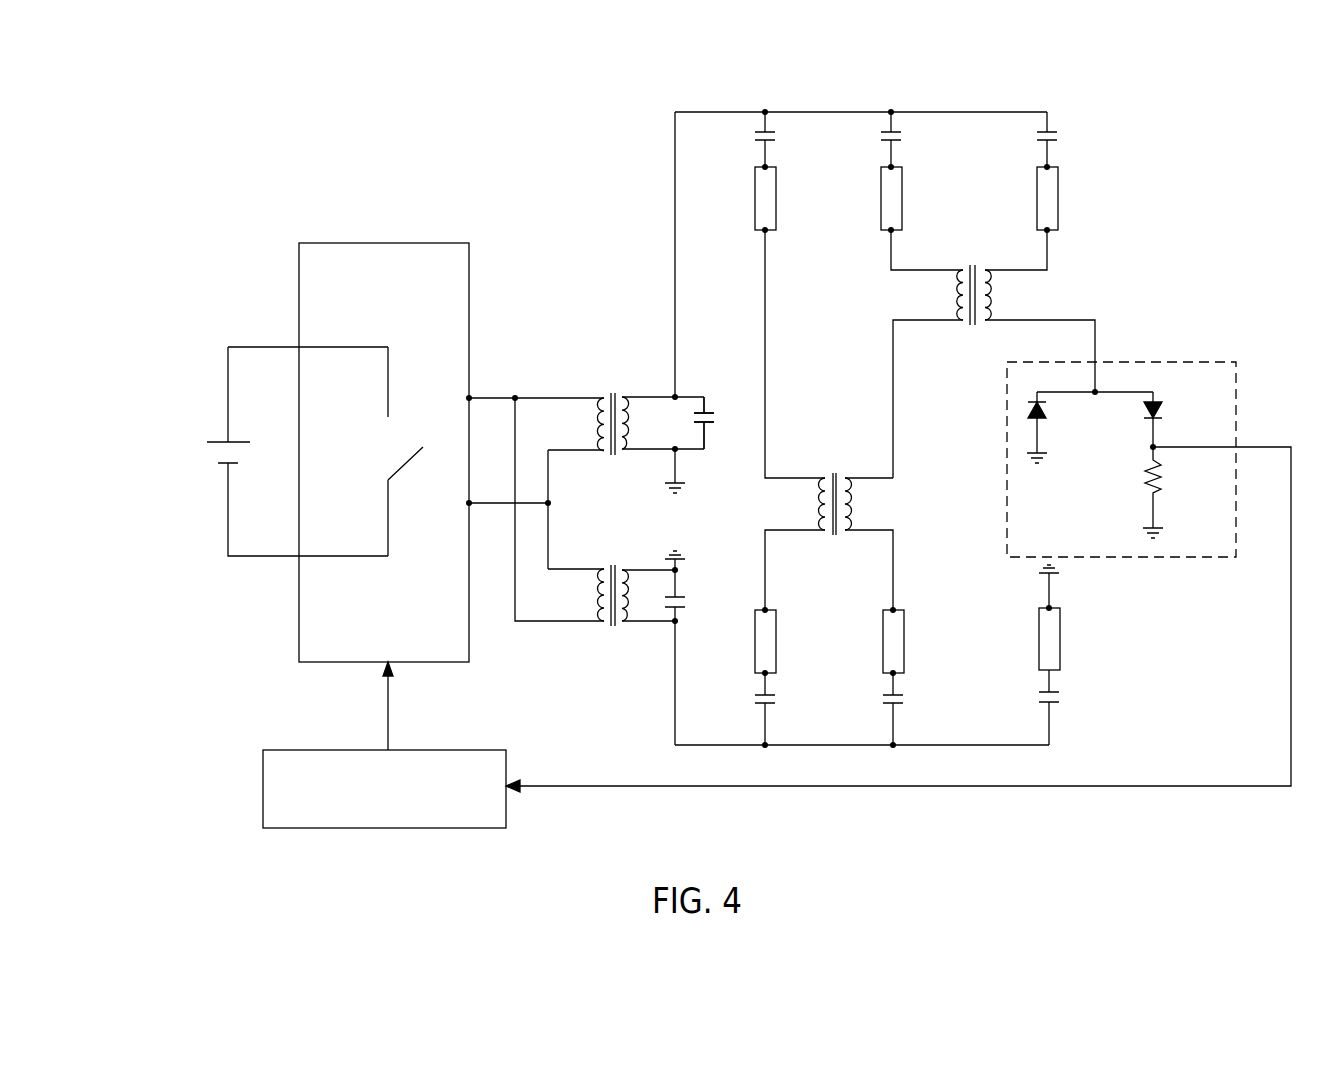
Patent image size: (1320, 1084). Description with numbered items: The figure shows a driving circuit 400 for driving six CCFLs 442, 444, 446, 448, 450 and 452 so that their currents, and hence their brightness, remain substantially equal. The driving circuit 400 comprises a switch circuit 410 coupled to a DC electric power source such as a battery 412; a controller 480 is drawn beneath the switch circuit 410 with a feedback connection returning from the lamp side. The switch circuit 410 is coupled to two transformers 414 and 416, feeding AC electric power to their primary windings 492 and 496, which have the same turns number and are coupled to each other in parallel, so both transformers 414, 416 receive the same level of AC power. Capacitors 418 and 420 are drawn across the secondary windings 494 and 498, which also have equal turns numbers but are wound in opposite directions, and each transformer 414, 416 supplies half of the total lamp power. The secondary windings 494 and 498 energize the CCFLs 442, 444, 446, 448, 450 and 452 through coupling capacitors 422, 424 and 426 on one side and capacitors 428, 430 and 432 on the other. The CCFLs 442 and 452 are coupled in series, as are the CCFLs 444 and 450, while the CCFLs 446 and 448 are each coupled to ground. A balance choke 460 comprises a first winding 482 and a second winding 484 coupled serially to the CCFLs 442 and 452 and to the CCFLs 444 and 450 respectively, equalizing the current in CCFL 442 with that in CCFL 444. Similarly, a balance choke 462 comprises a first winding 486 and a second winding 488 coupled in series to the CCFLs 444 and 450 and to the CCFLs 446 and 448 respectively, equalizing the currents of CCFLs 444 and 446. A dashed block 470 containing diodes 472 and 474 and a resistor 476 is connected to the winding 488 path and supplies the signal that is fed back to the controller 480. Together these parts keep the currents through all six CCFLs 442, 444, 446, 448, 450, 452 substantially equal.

The driving circuit 400 is at (226, 183).
The switch circuit 410 is at (417, 662).
The battery 412 is at (226, 442).
The transformer 414 is at (615, 425).
The transformer 416 is at (615, 596).
The capacitor 418 is at (713, 427).
The capacitor 420 is at (680, 615).
The capacitor 422 is at (770, 140).
The capacitor 424 is at (896, 140).
The capacitor 426 is at (1052, 140).
The capacitor 428 is at (1054, 703).
The capacitor 430 is at (898, 705).
The capacitor 432 is at (770, 705).
The CCFL 442 is at (770, 232).
The CCFL 444 is at (896, 232).
The CCFL 446 is at (1052, 232).
The CCFL 448 is at (1050, 606).
The CCFL 450 is at (897, 608).
The CCFL 452 is at (772, 608).
The balance choke 460 is at (834, 507).
The balance choke 462 is at (973, 298).
The detector circuit 470 is at (1126, 446).
The diode 472 is at (1158, 420).
The diode 474 is at (1042, 420).
The resistor 476 is at (1158, 495).
The controller 480 is at (462, 750).
The first winding 482 is at (825, 532).
The second winding 484 is at (845, 532).
The first winding 486 is at (963, 323).
The second winding 488 is at (985, 323).
The primary winding 492 is at (601, 454).
The secondary winding 494 is at (628, 457).
The primary winding 496 is at (601, 625).
The secondary winding 498 is at (628, 628).